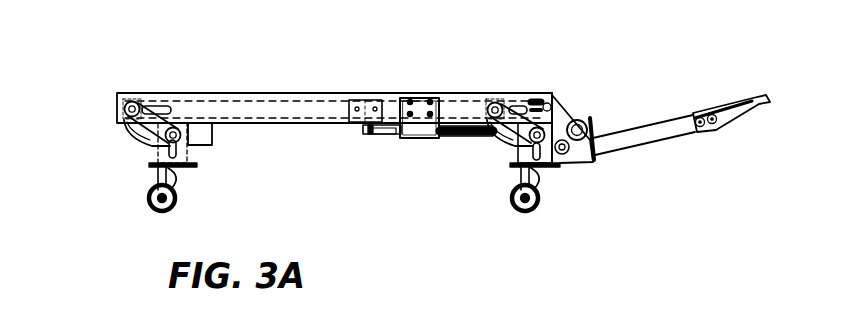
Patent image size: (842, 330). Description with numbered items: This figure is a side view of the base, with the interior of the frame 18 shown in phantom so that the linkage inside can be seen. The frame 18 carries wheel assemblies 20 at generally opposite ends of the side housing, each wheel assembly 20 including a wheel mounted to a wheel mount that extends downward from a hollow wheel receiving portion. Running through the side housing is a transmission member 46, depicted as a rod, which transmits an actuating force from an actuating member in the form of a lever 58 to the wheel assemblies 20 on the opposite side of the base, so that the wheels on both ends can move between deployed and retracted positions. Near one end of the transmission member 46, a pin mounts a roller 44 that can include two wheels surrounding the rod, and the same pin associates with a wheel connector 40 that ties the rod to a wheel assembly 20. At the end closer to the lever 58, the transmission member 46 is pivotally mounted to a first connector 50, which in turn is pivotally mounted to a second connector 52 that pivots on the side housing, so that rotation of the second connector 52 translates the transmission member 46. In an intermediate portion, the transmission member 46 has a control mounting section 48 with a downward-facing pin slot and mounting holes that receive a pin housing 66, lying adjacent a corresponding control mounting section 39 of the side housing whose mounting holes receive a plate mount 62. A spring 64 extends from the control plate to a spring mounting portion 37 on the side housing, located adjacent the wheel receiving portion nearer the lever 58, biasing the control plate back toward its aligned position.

The frame 18 is at (116, 58).
The wheel assembly 20 is at (126, 192).
The spring mounting portion 37 is at (498, 140).
The control mounting section 39 is at (437, 88).
The wheel connector 40 is at (143, 128).
The roller 44 is at (139, 93).
The transmission member 46 is at (226, 110).
The control mounting section 48 is at (371, 88).
The first connector 50 is at (541, 95).
The second connector 52 is at (566, 110).
The lever 58 is at (727, 107).
The plate mount 62 is at (419, 100).
The spring 64 is at (458, 138).
The pin housing 66 is at (365, 95).